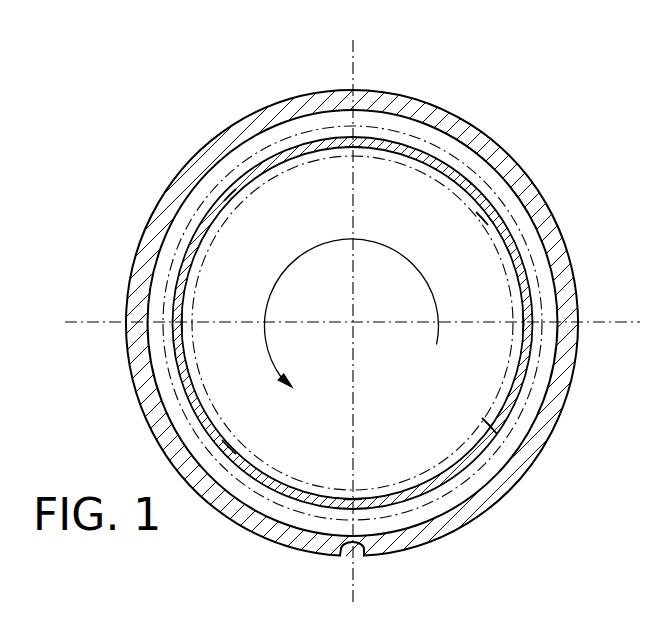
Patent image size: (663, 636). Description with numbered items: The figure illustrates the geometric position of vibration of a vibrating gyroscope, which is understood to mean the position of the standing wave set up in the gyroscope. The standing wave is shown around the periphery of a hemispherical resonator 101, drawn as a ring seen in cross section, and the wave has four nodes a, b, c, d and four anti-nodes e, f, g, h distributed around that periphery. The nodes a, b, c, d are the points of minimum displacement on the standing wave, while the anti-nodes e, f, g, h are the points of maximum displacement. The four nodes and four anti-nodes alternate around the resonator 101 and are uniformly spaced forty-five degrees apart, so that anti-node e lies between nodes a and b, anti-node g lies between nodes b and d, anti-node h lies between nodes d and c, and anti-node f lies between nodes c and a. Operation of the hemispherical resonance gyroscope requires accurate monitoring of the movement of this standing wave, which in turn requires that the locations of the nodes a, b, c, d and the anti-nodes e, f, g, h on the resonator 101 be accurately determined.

The hemispherical resonator 101 is at (445, 160).
The node a is at (230, 193).
The node b is at (482, 205).
The node c is at (229, 448).
The node d is at (490, 427).
The anti-node e is at (355, 147).
The anti-node f is at (182, 323).
The anti-node g is at (522, 322).
The anti-node h is at (352, 500).